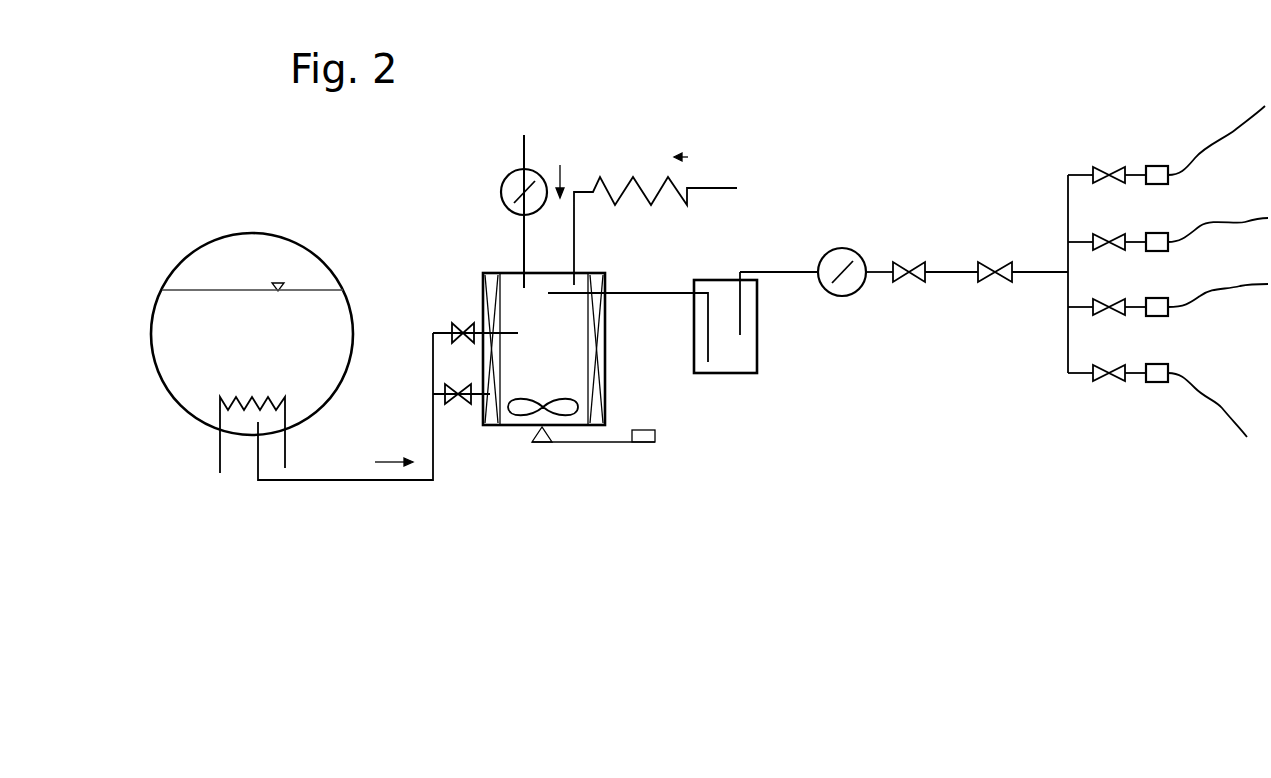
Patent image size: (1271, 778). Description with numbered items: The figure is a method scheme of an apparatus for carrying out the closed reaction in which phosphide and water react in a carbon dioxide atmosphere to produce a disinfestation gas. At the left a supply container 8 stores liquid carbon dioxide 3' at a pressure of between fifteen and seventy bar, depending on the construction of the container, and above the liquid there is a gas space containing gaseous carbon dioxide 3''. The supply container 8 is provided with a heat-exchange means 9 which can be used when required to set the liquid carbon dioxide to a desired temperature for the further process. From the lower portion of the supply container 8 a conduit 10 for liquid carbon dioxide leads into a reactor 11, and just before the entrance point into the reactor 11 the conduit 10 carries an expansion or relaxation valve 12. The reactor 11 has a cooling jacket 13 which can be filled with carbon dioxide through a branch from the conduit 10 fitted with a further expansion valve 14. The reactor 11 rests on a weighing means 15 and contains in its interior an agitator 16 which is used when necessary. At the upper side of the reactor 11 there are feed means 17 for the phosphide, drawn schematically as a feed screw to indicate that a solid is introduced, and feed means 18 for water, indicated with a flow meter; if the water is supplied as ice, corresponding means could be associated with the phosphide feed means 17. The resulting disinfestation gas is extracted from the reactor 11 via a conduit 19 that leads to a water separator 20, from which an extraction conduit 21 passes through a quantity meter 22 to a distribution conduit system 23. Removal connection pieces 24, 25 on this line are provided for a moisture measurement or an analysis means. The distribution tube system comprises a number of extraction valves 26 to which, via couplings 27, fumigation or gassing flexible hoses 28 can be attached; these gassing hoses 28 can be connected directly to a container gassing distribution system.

The liquid carbon dioxide 3' is at (241, 374).
The gaseous carbon dioxide 3'' is at (252, 218).
The supply container 8 is at (186, 258).
The heat-exchange means 9 is at (216, 455).
The conduit 10 is at (310, 481).
The reactor 11 is at (492, 263).
The expansion or relaxation valve 12 is at (449, 312).
The cooling jacket 13 is at (603, 383).
The expansion valve 14 is at (455, 402).
The weighing means 15 is at (602, 443).
The agitator 16 is at (562, 415).
The feed means for the phosphide 17 is at (629, 155).
The feed means for water 18 is at (488, 164).
The conduit 19 is at (639, 289).
The water separator 20 is at (735, 357).
The extraction conduit 21 is at (797, 273).
The quantity meter 22 is at (837, 246).
The distribution conduit system 23 is at (1052, 200).
The removal connection piece 24 is at (895, 260).
The removal connection piece 25 is at (985, 262).
The extraction valves 26 is at (1113, 168).
The couplings 27 is at (1162, 170).
The gassing flexible tubes or hoses 28 is at (1230, 128).